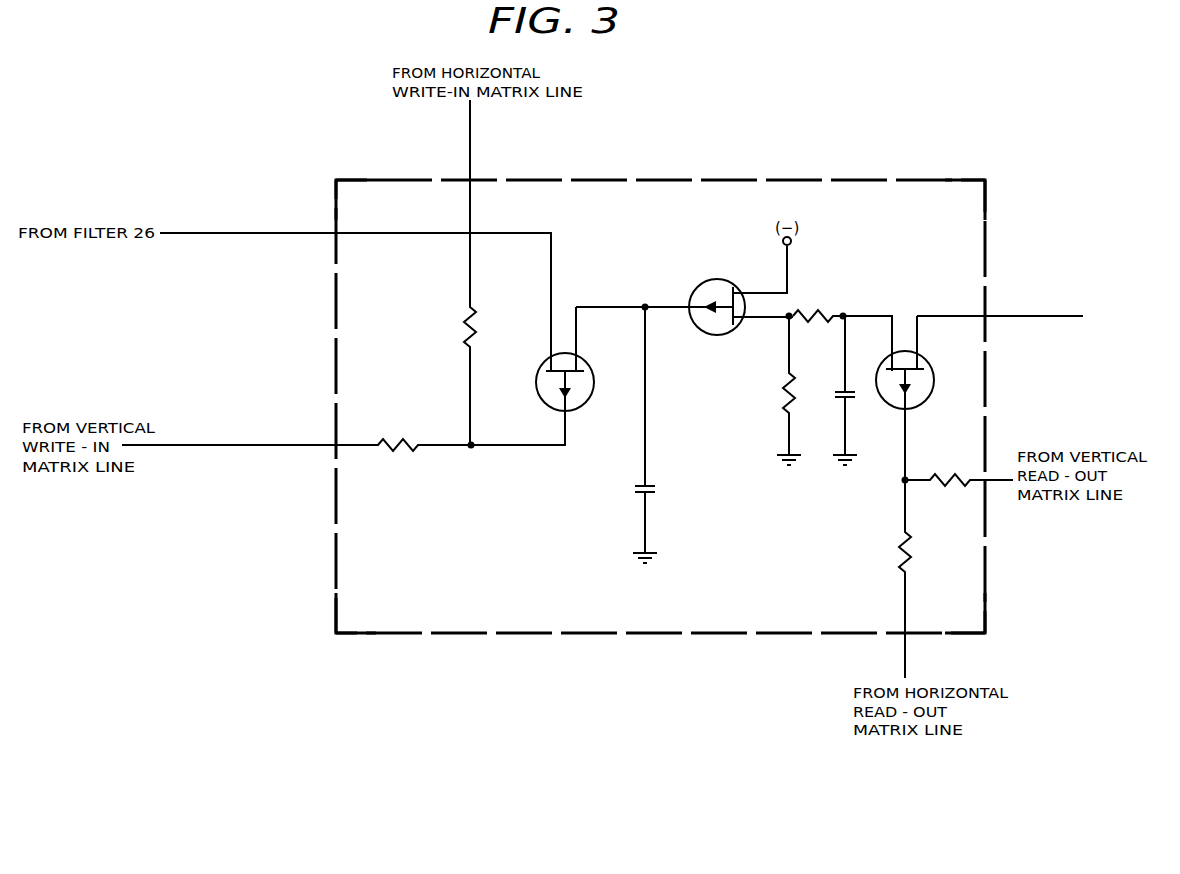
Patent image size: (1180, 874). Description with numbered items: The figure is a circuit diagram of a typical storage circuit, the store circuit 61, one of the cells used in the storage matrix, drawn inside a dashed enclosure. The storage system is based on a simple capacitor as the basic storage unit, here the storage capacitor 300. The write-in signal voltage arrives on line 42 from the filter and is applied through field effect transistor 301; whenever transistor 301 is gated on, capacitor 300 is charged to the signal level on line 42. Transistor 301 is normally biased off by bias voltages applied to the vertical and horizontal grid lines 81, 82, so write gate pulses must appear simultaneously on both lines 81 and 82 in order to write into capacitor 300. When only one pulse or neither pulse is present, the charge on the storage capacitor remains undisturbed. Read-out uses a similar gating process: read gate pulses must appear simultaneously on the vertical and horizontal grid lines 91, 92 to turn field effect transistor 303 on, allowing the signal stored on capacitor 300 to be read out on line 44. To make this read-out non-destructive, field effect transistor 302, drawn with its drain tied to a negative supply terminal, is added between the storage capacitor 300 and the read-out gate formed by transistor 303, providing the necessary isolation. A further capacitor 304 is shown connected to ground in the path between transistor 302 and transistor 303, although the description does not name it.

The store circuit 61 is at (416, 634).
The horizontal grid line 82 is at (468, 150).
The line 42 is at (236, 232).
The vertical grid line 81 is at (261, 445).
The field effect transistor 301 is at (591, 373).
The capacitor 300 is at (655, 487).
The field effect transistor 302 is at (704, 279).
The capacitor 304 is at (839, 389).
The field effect transistor 303 is at (933, 377).
The line 44 is at (1040, 314).
The vertical grid line 91 is at (997, 483).
The horizontal grid line 92 is at (908, 617).